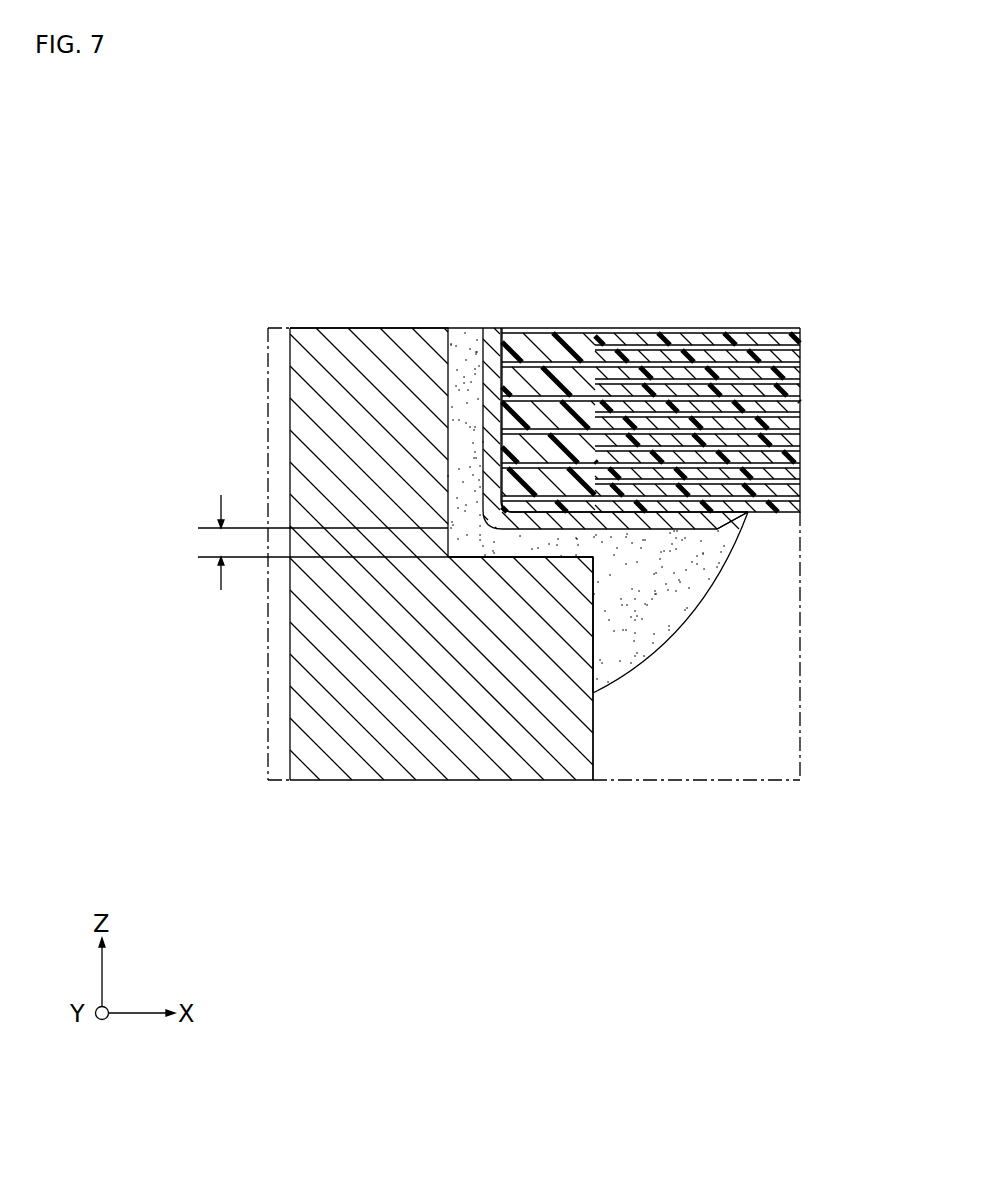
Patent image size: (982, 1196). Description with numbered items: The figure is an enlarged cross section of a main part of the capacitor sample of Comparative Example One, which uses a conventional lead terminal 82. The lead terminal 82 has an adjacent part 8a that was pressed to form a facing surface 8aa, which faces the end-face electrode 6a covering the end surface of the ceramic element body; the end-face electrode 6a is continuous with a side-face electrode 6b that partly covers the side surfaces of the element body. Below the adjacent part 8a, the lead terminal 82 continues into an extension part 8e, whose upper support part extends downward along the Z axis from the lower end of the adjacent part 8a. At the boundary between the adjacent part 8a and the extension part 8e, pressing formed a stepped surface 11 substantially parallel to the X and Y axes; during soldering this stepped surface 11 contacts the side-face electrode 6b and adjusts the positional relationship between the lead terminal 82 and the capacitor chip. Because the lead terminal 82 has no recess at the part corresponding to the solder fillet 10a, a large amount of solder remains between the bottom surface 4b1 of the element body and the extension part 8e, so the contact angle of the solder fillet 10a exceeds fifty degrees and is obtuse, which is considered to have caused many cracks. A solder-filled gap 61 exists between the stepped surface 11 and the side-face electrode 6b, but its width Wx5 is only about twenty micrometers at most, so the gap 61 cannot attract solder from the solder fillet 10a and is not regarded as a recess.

The lead terminal 82 is at (296, 323).
The adjacent part 8a is at (330, 422).
The facing surface 8aa is at (455, 348).
The end-face electrode 6a is at (488, 336).
The extension part 8e is at (360, 652).
The bottom surface 4b1 is at (785, 513).
The solder fillet 10a is at (650, 645).
The side-face electrode 6b is at (678, 530).
The stepped surface 11 is at (528, 557).
The gap 61 is at (552, 542).
The width of the gap Wx5 is at (372, 546).